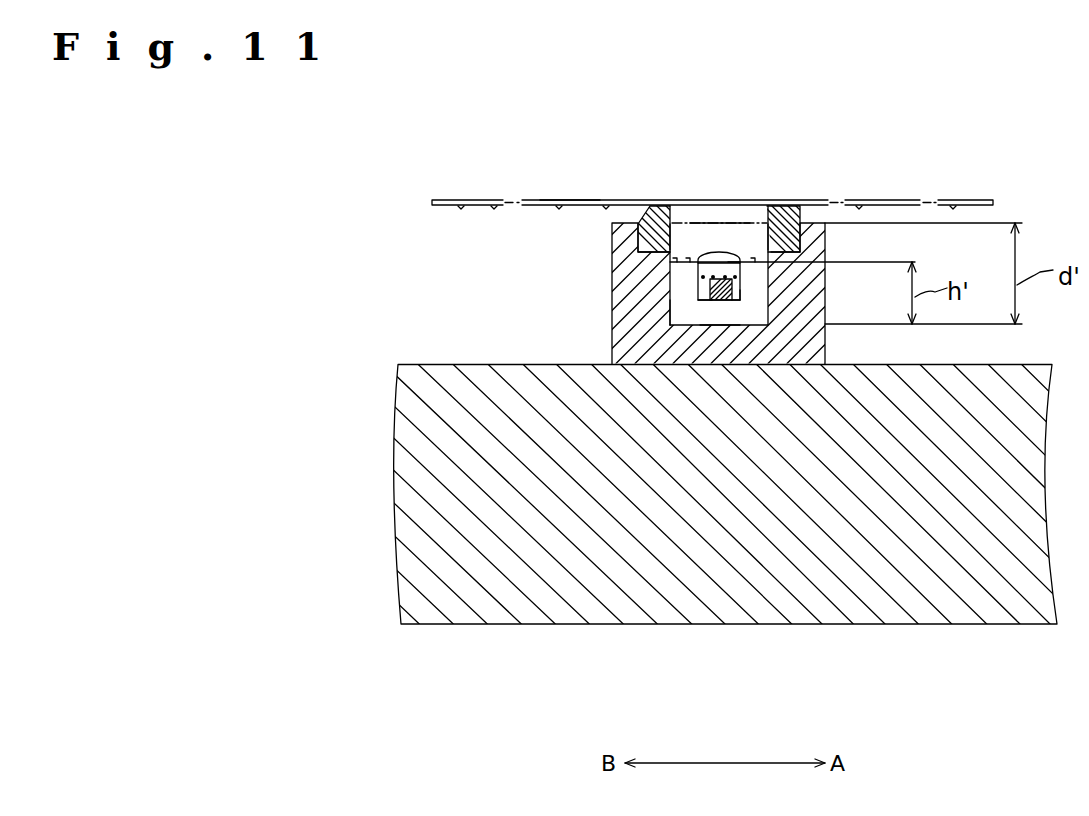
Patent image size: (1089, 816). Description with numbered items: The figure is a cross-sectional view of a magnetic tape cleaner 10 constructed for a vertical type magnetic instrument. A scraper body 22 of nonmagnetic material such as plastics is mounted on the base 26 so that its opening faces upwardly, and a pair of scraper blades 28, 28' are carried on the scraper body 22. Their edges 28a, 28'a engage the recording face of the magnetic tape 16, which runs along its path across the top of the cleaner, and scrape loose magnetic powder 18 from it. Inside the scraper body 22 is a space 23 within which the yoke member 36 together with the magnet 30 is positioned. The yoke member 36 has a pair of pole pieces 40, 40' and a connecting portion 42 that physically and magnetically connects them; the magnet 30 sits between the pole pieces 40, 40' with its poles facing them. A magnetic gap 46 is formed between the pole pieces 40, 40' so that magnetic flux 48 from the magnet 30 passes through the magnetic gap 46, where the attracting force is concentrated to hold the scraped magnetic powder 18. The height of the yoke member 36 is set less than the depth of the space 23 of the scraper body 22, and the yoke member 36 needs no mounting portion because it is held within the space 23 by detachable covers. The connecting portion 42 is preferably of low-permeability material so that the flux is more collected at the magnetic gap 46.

The magnetic tape cleaner 10 is at (700, 186).
The magnetic tape 16 is at (970, 200).
The magnetic powder 18 is at (593, 200).
The scraper body 22 is at (733, 300).
The space 23 is at (670, 272).
The base 26 is at (425, 412).
The scraper blade 28 is at (637, 172).
The edge 28a is at (672, 238).
The scraper blade 28' is at (844, 170).
The edge 28'a is at (824, 168).
The magnet 30 is at (698, 285).
The yoke member 36 is at (721, 331).
The pole piece 40 is at (588, 498).
The pole piece 40' is at (642, 498).
The connecting portion 42 is at (741, 305).
The magnetic gap 46 is at (715, 250).
The magnetic flux 48 is at (733, 258).